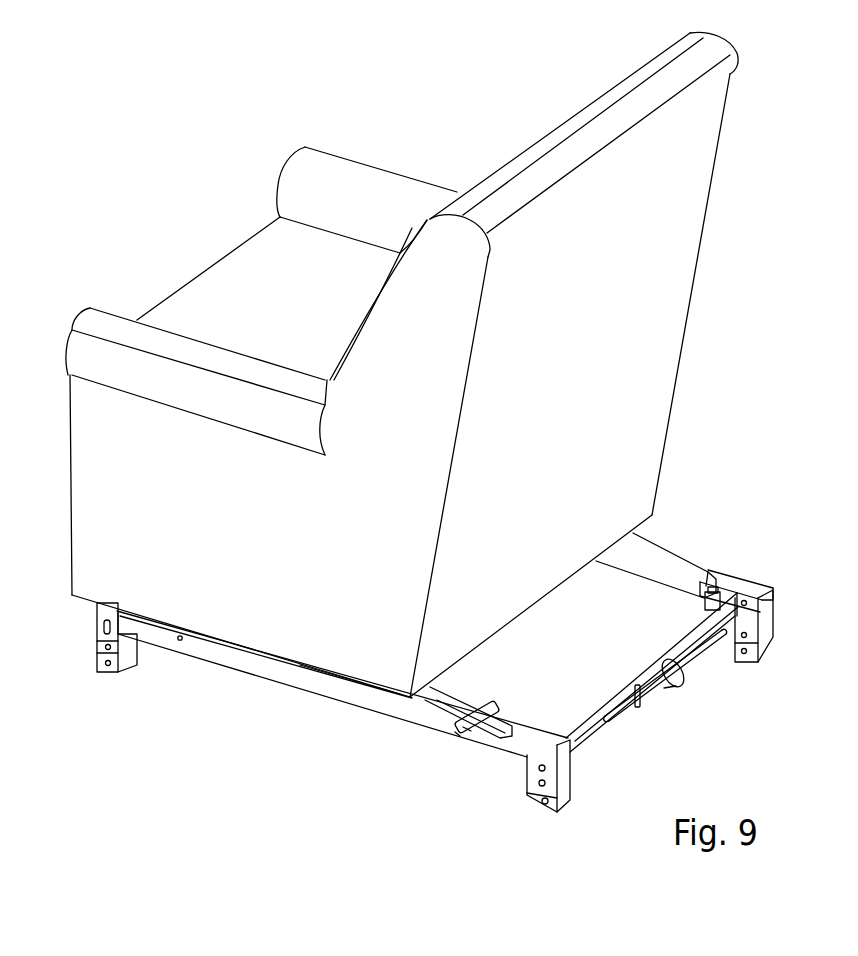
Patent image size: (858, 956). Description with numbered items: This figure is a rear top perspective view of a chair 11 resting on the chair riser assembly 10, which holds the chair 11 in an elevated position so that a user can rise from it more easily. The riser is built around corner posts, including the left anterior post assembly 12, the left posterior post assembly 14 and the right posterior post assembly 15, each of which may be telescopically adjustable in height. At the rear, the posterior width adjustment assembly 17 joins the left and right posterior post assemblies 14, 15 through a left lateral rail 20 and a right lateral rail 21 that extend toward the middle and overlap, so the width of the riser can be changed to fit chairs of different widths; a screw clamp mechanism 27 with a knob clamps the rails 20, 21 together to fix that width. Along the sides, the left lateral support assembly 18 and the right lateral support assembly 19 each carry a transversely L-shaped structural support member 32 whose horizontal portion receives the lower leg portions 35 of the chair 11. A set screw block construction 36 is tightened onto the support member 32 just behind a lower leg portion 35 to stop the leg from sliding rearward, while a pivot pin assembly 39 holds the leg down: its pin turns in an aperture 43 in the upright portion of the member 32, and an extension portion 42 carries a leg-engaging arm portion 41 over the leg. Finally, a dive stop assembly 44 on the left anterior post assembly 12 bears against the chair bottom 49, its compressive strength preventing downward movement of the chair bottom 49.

The chair riser assembly 10 is at (770, 575).
The chair 11 is at (735, 52).
The left anterior post assembly 12 is at (107, 684).
The left posterior post assembly 14 is at (547, 815).
The right posterior post assembly 15 is at (760, 667).
The posterior width adjustment assembly 17 is at (626, 686).
The left lateral support assembly 18 is at (347, 719).
The right lateral support assembly 19 is at (717, 563).
The left lateral rail 20 is at (602, 730).
The right lateral rail 21 is at (750, 612).
The screw clamp mechanism 27 is at (683, 689).
The L-shaped structural support member 32 is at (287, 682).
The lower leg portion 35 is at (668, 553).
The set screw block construction 36 is at (703, 607).
The pivot pin assembly 39 is at (453, 734).
The leg-engaging arm portion 41 is at (509, 703).
The extension portion 42 is at (467, 730).
The aperture 43 is at (180, 643).
The dive stop assembly 44 is at (96, 628).
The chair bottom 49 is at (82, 575).